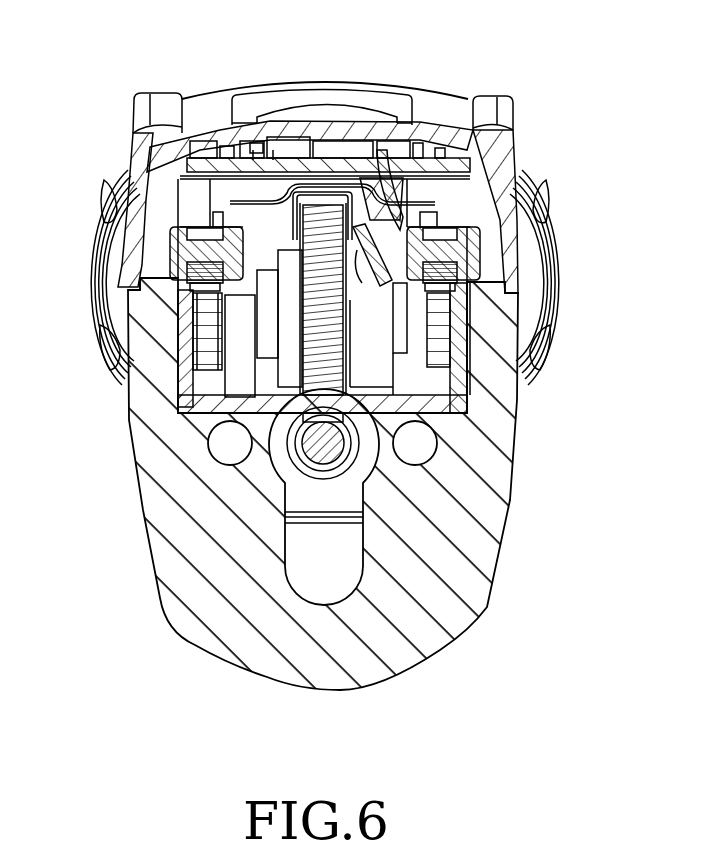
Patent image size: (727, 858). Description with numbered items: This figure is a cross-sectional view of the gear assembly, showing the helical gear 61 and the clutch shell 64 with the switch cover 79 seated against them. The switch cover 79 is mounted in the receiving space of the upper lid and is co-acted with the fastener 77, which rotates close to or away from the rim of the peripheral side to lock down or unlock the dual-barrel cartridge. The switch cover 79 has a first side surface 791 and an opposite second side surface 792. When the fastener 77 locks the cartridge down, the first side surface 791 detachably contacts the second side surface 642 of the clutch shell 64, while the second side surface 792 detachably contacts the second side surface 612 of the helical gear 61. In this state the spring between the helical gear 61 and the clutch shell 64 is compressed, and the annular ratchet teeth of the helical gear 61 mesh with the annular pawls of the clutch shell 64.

The fastener 77 is at (445, 102).
The second side surface 612 is at (273, 218).
The switch cover 79 is at (367, 220).
The second side surface 792 is at (345, 246).
The first side surface 791 is at (373, 267).
The second side surface 642 is at (410, 305).
The clutch shell 64 is at (363, 337).
The helical gear 61 is at (345, 345).